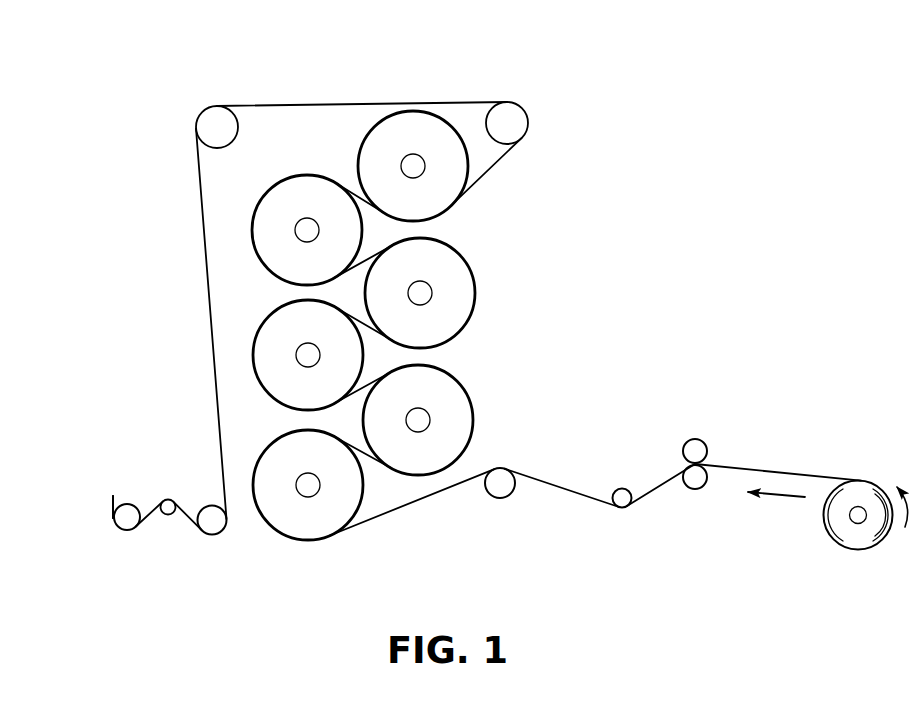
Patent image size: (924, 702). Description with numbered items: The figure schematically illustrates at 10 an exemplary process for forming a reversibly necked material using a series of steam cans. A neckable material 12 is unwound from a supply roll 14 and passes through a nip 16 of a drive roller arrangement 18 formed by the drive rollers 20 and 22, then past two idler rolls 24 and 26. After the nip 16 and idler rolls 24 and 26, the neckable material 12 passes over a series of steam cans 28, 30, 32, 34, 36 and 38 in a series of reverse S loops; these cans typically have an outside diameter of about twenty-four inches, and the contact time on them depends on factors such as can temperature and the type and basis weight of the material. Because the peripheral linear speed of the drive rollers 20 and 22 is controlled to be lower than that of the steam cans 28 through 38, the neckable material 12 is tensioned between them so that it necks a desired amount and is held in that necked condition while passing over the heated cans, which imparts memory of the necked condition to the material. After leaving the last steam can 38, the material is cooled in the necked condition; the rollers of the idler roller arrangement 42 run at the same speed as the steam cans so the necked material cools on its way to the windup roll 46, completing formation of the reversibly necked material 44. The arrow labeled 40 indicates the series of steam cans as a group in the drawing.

The process for forming a reversibly necked material 10 is at (814, 105).
The neckable material 12 is at (813, 476).
The supply roll 14 is at (867, 540).
The nip 16 is at (712, 456).
The drive roller arrangement 18 is at (677, 439).
The drive roller 20 is at (696, 441).
The drive roller 22 is at (699, 487).
The idler roll 24 is at (617, 489).
The idler roll 26 is at (503, 493).
The steam can 28 is at (312, 528).
The steam can 30 is at (462, 419).
The steam can 32 is at (283, 384).
The steam can 34 is at (458, 297).
The steam can 36 is at (276, 260).
The steam can 38 is at (438, 203).
The dryer section 40 is at (565, 279).
The idler roller arrangement 42 is at (192, 537).
The reversibly necked material 44 is at (120, 518).
The windup roll 46 is at (106, 502).